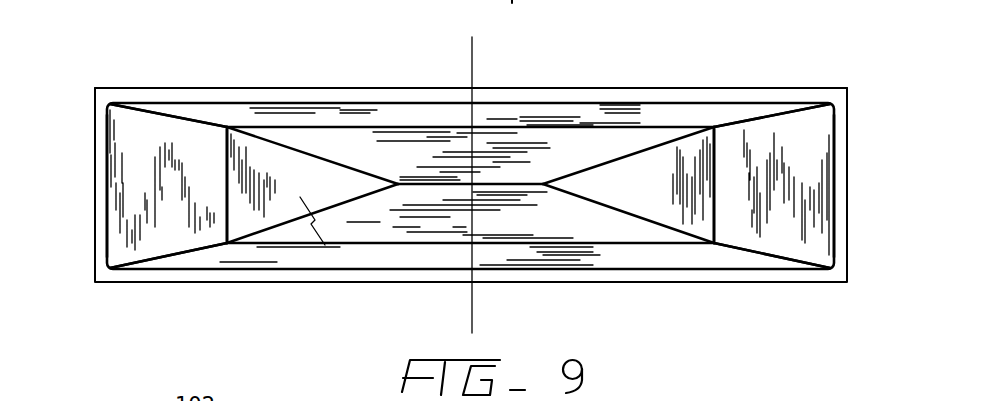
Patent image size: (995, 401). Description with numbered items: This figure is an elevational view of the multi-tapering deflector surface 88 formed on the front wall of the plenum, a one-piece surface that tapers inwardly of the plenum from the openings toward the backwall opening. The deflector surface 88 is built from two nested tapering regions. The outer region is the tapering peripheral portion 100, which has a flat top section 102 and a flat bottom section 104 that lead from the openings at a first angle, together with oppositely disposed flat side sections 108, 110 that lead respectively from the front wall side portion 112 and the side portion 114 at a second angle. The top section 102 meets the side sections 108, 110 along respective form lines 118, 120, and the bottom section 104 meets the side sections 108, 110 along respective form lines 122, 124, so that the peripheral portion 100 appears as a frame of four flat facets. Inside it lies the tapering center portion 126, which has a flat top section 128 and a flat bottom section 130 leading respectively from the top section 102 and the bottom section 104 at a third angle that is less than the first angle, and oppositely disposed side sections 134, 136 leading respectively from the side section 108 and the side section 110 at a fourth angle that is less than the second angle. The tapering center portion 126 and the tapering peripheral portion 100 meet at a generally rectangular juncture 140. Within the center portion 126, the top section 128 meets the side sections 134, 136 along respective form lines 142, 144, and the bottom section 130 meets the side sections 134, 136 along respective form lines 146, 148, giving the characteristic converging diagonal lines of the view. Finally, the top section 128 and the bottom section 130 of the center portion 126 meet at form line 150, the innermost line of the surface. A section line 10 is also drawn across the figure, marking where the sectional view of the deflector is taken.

The section line 10- 10 is at (483, 47).
The multi-tapering deflector surface 88 is at (624, 80).
The tapering peripheral portion 100 is at (167, 87).
The flat top section 102 is at (206, 112).
The flat bottom section 104 is at (345, 258).
The side section 108 is at (120, 233).
The side section 110 is at (818, 124).
The front wall side portion 112 is at (104, 197).
The side portion 114 is at (842, 221).
The form line 118 is at (151, 112).
The form line 120 is at (755, 118).
The form line 122 is at (193, 252).
The form line 124 is at (747, 257).
The tapering center portion 126 is at (329, 121).
The flat top section 128 is at (360, 152).
The flat bottom section 130 is at (407, 232).
The side section 134 is at (243, 230).
The side section 136 is at (640, 192).
The generally rectangular juncture 140 is at (227, 214).
The form line 142 is at (360, 176).
The form line 144 is at (663, 147).
The form line 146 is at (356, 200).
The form line 148 is at (615, 212).
The form line 150 is at (521, 182).